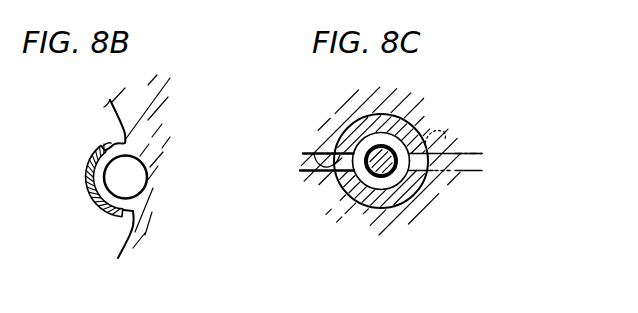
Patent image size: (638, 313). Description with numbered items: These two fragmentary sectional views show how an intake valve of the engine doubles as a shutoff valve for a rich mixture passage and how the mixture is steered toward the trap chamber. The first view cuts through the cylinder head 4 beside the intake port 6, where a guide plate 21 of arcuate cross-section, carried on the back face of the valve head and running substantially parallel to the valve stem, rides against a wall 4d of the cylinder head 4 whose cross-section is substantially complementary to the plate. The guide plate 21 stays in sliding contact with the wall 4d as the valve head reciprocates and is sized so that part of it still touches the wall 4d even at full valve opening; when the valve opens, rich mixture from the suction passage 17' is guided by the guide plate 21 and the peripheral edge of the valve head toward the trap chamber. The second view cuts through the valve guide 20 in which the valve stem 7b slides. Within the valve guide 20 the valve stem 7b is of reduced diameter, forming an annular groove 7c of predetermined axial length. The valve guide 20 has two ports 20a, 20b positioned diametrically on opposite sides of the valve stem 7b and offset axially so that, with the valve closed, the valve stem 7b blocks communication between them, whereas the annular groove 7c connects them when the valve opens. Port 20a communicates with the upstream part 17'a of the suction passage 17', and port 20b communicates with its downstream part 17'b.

In FIG. 8B, the cylinder head 4 is at (133, 120).
In FIG. 8C, the cylinder head 4 is at (412, 116).
In FIG. 8B, the wall 4d is at (103, 146).
In FIG. 8B, the intake port 6 is at (104, 114).
In FIG. 8B, the suction passage 17' is at (155, 176).
In FIG. 8B, the guide plate 21 is at (88, 190).
In FIG. 8C, the valve guide 20 is at (406, 194).
In FIG. 8C, the valve stem 7b is at (360, 128).
In FIG. 8C, the annular groove 7c is at (368, 185).
In FIG. 8C, the upstream part of suction passage 17'a is at (313, 148).
In FIG. 8C, the downstream part of suction passage 17'b is at (449, 185).
In FIG. 8C, the port 20a is at (343, 172).
In FIG. 8C, the port 20b is at (444, 132).